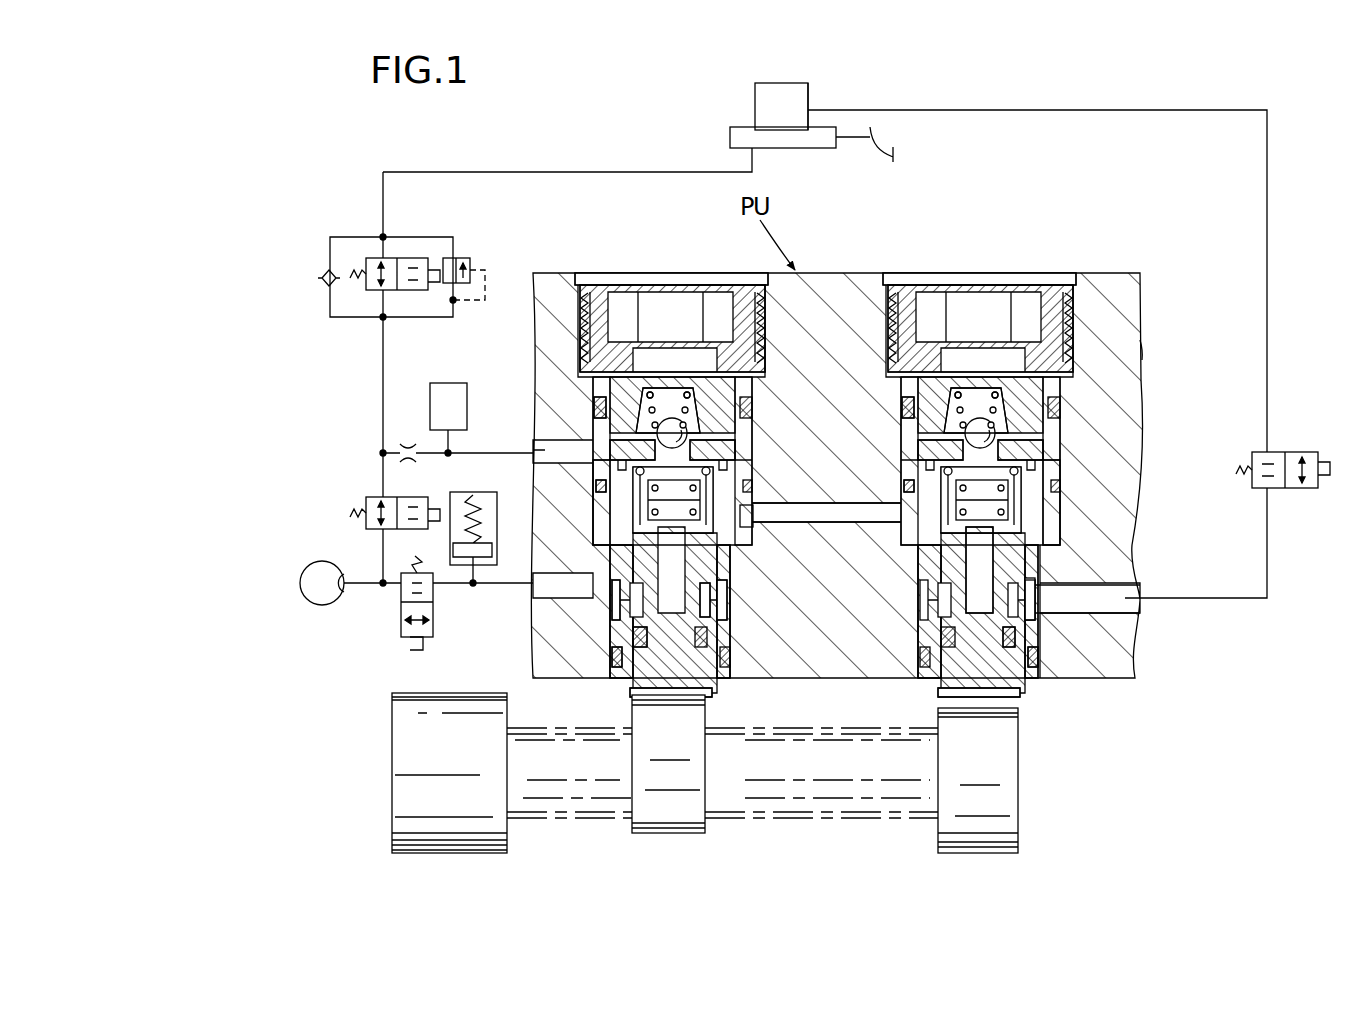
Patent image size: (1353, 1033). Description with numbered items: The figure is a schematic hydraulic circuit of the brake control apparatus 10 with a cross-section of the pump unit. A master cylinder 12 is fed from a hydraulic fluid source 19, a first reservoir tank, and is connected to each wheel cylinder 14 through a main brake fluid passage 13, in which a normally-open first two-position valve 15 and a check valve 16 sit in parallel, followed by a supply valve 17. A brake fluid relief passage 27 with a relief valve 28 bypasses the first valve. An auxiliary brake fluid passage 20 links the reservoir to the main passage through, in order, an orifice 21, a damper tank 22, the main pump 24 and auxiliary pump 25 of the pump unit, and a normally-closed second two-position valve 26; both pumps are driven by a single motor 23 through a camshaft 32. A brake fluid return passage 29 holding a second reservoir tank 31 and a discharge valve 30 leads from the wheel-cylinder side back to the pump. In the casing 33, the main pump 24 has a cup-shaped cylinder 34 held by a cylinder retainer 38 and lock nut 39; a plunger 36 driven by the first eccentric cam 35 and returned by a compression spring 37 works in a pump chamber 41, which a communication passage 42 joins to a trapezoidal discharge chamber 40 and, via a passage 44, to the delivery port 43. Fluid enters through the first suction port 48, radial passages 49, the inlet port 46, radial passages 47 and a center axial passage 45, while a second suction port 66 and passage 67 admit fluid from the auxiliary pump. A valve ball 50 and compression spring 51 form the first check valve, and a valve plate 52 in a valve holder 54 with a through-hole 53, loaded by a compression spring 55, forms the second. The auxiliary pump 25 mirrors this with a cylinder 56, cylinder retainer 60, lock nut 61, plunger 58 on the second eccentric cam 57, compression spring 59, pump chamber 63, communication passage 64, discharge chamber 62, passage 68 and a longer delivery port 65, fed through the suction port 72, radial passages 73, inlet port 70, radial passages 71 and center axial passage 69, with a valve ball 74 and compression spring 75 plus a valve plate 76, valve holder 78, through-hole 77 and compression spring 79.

The brake control apparatus 10 is at (652, 130).
The master cylinder 12 is at (745, 145).
The main brake fluid passage 13 is at (545, 170).
The wheel cylinder 14 is at (302, 578).
The first two-position valve 15 is at (372, 262).
The check valve 16 is at (318, 272).
The supply valve 17 is at (365, 500).
The hydraulic fluid source 19 is at (755, 108).
The auxiliary brake fluid passage 20 is at (817, 510).
The orifice 21 is at (398, 448).
The damper tank 22 is at (447, 385).
The motor 23 is at (392, 762).
The main pump 24 is at (672, 270).
The auxiliary pump 25 is at (970, 270).
The second two-position valve 26 is at (1297, 450).
The brake fluid relief passage 27 is at (420, 236).
The relief valve 28 is at (462, 258).
The brake fluid return passage 29 is at (462, 590).
The discharge valve 30 is at (395, 613).
The second reservoir tank 31 is at (462, 493).
The camshaft 32 is at (826, 792).
The casing 33 is at (818, 285).
The cylinder 34 is at (622, 690).
The first eccentric cam 35 is at (675, 800).
The plunger 36 is at (712, 685).
The compression spring 37 is at (738, 446).
The cylinder retainer 38 is at (750, 345).
The lock nut 39 is at (602, 292).
The discharge chamber 40 is at (682, 392).
The pump chamber 41 is at (572, 495).
The communication passage 42 is at (742, 418).
The delivery port 43 is at (607, 445).
The passage 44 is at (592, 355).
The center axial passage 45 is at (672, 556).
The inlet port 46 is at (700, 600).
The radial passages 47 is at (605, 660).
The first suction port 48 is at (662, 603).
The radial passages 49 is at (568, 612).
The valve ball 50 is at (580, 415).
The compression spring 51 is at (655, 395).
The valve plate 52 is at (576, 582).
The through-hole 53 is at (605, 530).
The valve holder 54 is at (732, 472).
The compression spring 55 is at (622, 512).
The cylinder 56 is at (1030, 692).
The second eccentric cam 57 is at (1010, 797).
The plunger 58 is at (940, 702).
The compression spring 59 is at (1140, 458).
The cylinder retainer 60 is at (1138, 352).
The lock nut 61 is at (1055, 300).
The discharge chamber 62 is at (990, 392).
The pump chamber 63 is at (910, 452).
The communication passage 64 is at (1135, 428).
The delivery port 65 is at (880, 470).
The second suction port 66 is at (748, 525).
The passage 67 is at (748, 545).
The passage 68 is at (900, 380).
The center axial passage 69 is at (978, 690).
The inlet port 70 is at (1130, 581).
The radial passages 71 is at (962, 600).
The suction port 72 is at (1128, 618).
The radial passages 73 is at (1062, 668).
The valve ball 74 is at (1135, 398).
The compression spring 75 is at (963, 385).
The valve plate 76 is at (1135, 525).
The through-hole 77 is at (1135, 488).
The valve holder 78 is at (905, 494).
The compression spring 79 is at (905, 510).